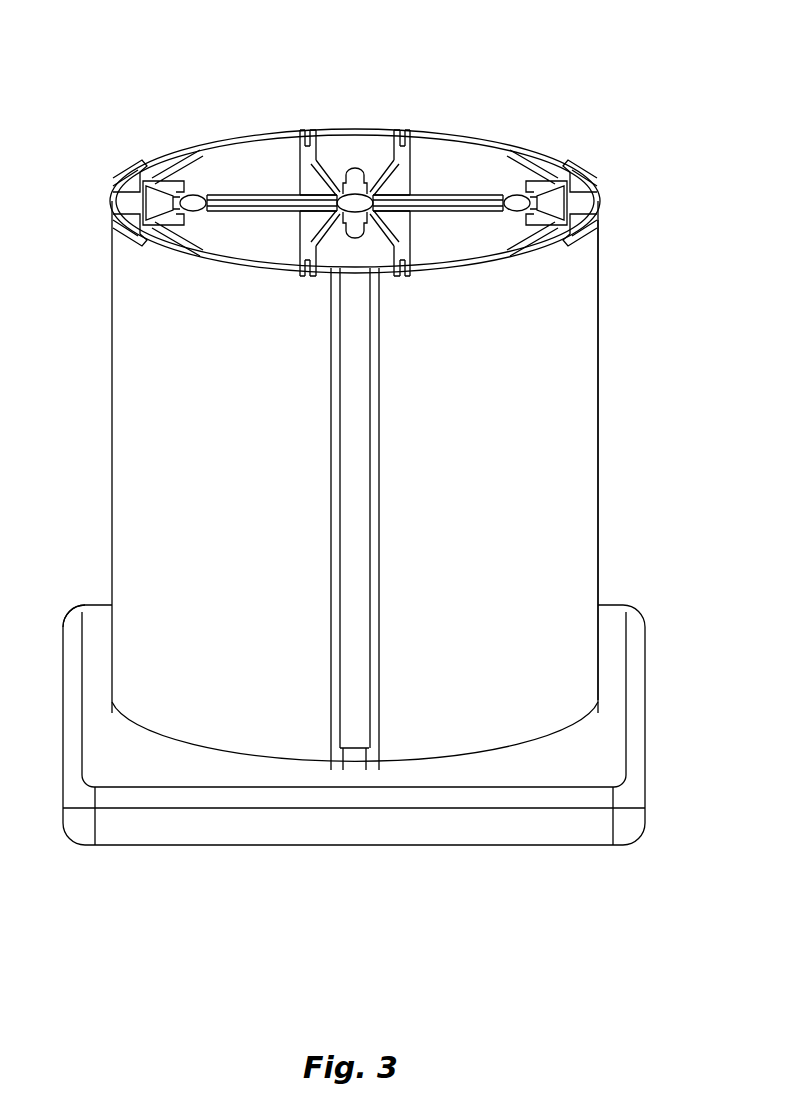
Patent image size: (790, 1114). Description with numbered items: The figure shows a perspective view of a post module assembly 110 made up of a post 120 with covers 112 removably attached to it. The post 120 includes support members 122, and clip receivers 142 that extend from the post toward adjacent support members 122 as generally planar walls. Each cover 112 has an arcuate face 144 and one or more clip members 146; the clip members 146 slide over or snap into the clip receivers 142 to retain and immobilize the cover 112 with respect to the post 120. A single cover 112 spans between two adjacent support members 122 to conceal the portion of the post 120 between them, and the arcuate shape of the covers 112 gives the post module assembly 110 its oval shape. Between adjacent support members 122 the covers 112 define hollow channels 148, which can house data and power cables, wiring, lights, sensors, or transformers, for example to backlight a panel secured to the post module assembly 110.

The post module assembly 110 is at (640, 437).
The cover 112 is at (140, 484).
The post 120 is at (447, 192).
The support member 122 is at (243, 225).
The clip receiver 142 is at (314, 138).
The arcuate face 144 is at (548, 288).
The clip member 146 is at (301, 135).
The hollow channel 148 is at (254, 160).